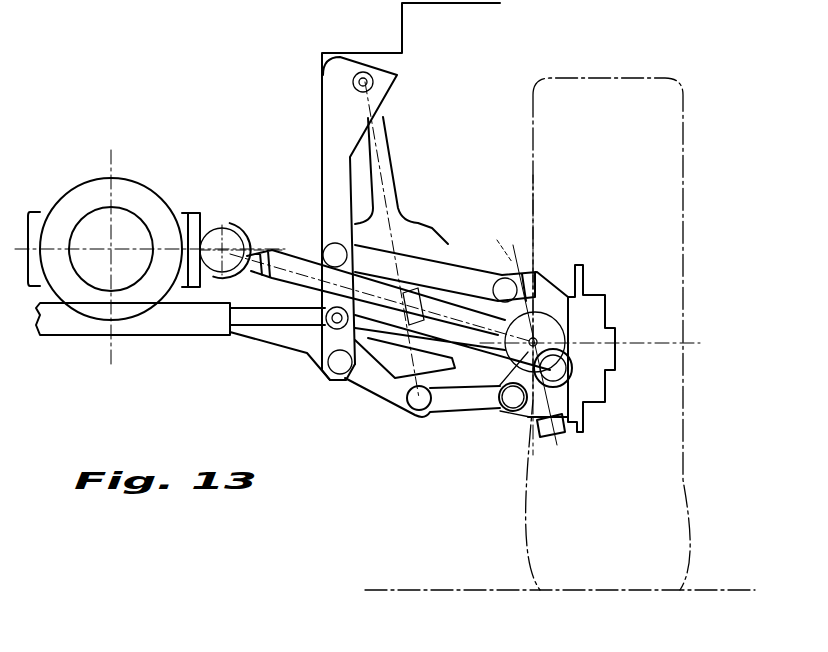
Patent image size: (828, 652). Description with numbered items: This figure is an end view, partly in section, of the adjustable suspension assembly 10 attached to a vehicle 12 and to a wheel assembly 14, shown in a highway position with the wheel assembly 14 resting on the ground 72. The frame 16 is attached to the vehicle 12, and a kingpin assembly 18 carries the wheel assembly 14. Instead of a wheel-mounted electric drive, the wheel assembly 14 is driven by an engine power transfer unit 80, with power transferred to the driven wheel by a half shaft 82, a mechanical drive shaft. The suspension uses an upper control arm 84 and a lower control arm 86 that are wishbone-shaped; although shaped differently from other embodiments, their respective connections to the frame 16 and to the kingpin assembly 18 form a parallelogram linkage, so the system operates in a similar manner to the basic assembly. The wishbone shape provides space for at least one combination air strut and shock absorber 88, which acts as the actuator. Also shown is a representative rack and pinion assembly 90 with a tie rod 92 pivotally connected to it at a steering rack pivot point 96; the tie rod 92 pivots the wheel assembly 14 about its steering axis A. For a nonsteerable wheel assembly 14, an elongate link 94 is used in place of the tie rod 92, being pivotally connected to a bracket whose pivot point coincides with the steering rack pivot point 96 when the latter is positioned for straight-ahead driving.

The adjustable suspension assembly 10 is at (475, 80).
The vehicle 12 is at (402, 27).
The wheel assembly 14 is at (512, 505).
The frame 16 is at (392, 93).
The kingpin assembly 18 is at (521, 420).
The ground 72 is at (394, 590).
The engine power transfer unit 80 is at (151, 193).
The half shaft 82 is at (296, 240).
The upper control arm 84 is at (452, 262).
The lower control arm 86 is at (385, 398).
The combination air strut and shock absorber 88 is at (403, 217).
The rack and pinion assembly 90 is at (183, 337).
The tie rod 92 is at (418, 411).
The elongate link 94 is at (495, 412).
The steering rack pivot point 96 is at (328, 326).